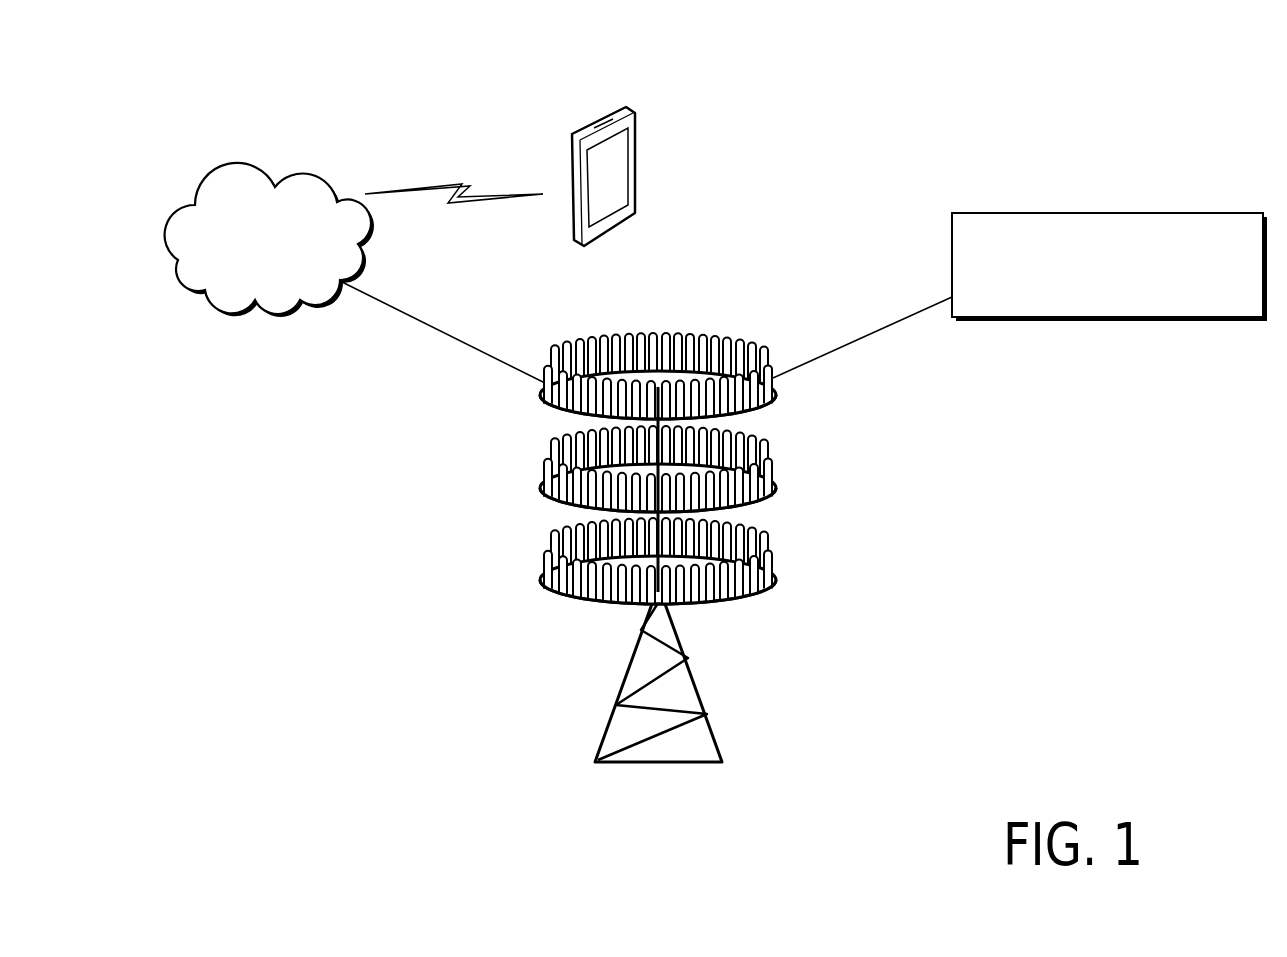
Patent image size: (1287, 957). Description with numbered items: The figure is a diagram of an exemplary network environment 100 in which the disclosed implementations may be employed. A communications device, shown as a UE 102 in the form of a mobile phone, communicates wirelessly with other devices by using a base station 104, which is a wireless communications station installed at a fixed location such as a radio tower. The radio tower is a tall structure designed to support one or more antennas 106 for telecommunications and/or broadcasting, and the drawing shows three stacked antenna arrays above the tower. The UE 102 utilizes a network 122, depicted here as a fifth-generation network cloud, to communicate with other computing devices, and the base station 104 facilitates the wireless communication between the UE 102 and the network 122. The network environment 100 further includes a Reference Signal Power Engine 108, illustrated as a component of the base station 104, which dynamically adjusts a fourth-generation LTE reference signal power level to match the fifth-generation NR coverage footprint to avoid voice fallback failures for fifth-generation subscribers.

The network environment 100 is at (90, 127).
The UE 102 is at (602, 115).
The base station 104 is at (702, 682).
The antennas 106 is at (737, 340).
The Reference Signal Power Engine 108 is at (1000, 212).
The network 122 is at (240, 184).